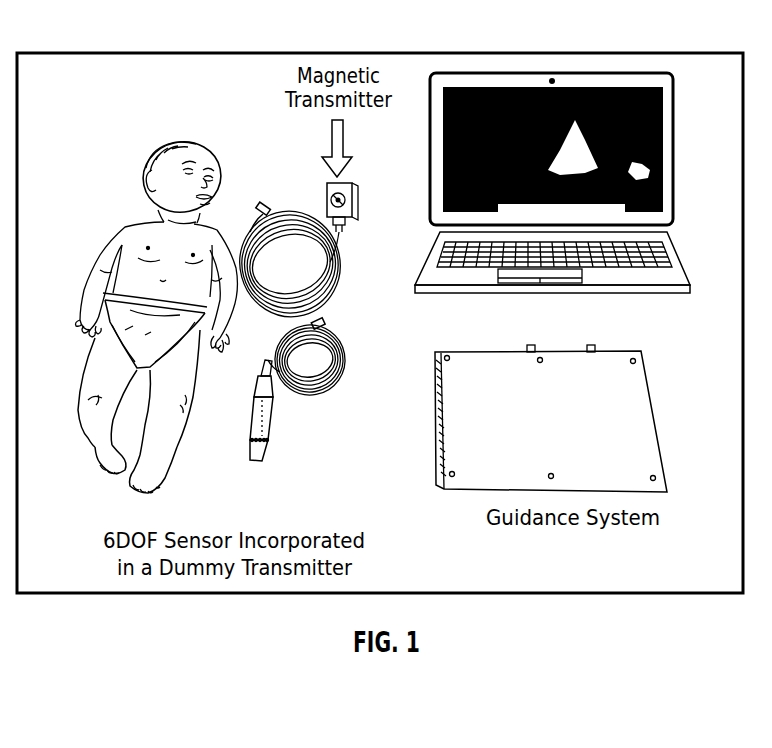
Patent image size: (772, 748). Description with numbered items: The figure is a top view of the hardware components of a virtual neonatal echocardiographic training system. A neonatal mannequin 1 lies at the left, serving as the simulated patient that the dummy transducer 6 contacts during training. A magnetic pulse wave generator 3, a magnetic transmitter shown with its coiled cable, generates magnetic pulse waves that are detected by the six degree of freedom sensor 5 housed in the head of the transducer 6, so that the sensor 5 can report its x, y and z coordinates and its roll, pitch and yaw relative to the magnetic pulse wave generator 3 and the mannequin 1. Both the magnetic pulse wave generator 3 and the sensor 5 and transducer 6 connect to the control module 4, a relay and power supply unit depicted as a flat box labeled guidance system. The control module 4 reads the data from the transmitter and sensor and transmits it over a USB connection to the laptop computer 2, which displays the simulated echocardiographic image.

The neonatal mannequin 1 is at (140, 240).
The laptop computer 2 is at (578, 73).
The magnetic pulse wave generator 3 is at (322, 199).
The control module 4 is at (424, 439).
The six degree of freedom (6DOF) sensor 5 is at (258, 457).
The transducer 6 is at (262, 430).